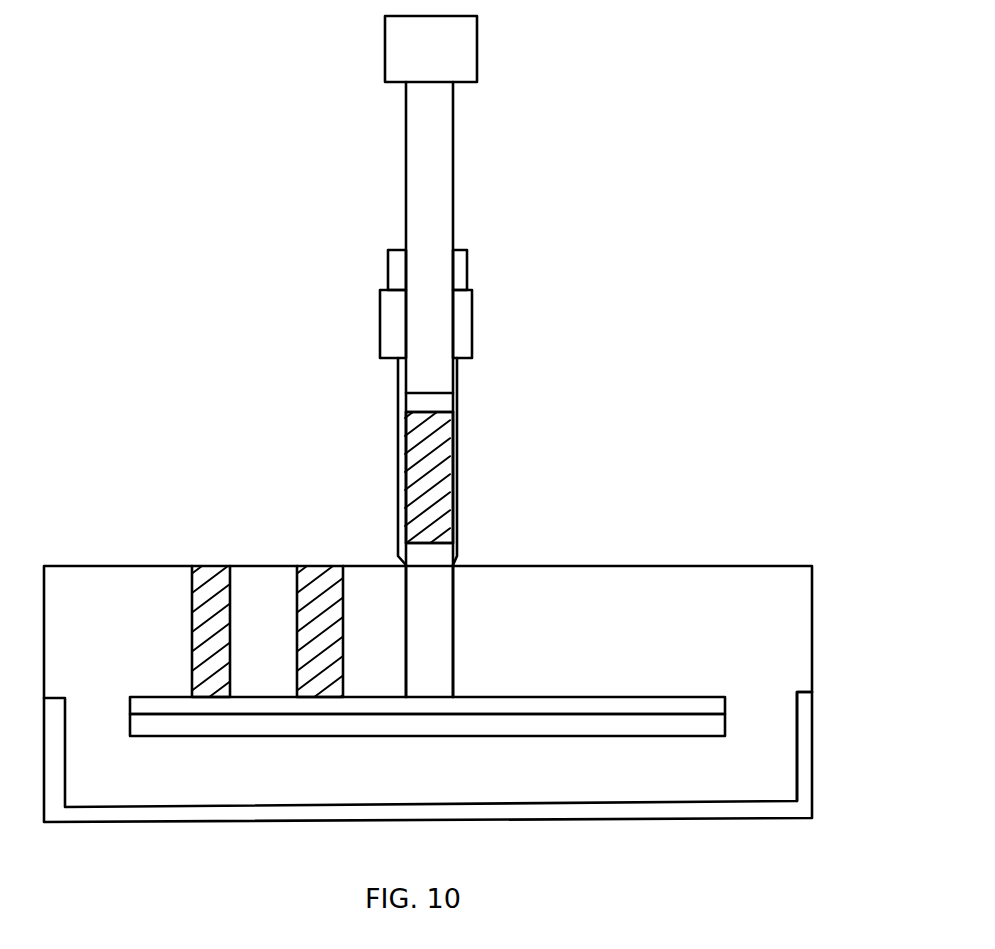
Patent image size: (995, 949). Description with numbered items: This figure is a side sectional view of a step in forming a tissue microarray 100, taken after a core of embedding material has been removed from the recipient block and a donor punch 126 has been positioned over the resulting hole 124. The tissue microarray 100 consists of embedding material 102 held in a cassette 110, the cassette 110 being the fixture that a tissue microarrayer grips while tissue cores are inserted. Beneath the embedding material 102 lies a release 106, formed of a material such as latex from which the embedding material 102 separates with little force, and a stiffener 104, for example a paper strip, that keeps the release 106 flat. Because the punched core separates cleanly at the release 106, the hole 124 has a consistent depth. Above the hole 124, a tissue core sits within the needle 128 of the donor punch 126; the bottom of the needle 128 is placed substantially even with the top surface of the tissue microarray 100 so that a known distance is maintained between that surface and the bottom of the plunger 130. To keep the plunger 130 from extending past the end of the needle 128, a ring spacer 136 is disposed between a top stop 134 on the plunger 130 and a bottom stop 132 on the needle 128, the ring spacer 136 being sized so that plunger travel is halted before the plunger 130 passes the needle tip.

The tissue microarray 100 is at (792, 440).
The embedding material 102 is at (812, 633).
The stiffener 104 is at (665, 735).
The release 106 is at (690, 697).
The cassette 110 is at (813, 752).
The hole 124 is at (420, 626).
The donor punch 126 is at (479, 356).
The needle 128 is at (453, 507).
The plunger 130 is at (453, 227).
The bottom stop 132 is at (472, 335).
The top stop 134 is at (477, 50).
The ring spacer 136 is at (467, 272).